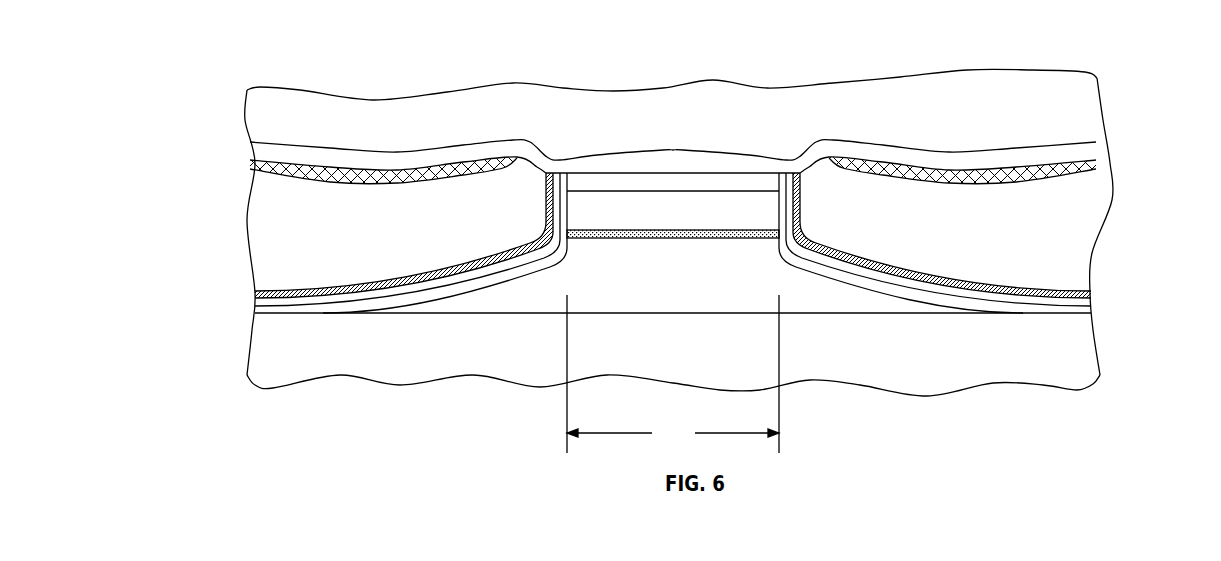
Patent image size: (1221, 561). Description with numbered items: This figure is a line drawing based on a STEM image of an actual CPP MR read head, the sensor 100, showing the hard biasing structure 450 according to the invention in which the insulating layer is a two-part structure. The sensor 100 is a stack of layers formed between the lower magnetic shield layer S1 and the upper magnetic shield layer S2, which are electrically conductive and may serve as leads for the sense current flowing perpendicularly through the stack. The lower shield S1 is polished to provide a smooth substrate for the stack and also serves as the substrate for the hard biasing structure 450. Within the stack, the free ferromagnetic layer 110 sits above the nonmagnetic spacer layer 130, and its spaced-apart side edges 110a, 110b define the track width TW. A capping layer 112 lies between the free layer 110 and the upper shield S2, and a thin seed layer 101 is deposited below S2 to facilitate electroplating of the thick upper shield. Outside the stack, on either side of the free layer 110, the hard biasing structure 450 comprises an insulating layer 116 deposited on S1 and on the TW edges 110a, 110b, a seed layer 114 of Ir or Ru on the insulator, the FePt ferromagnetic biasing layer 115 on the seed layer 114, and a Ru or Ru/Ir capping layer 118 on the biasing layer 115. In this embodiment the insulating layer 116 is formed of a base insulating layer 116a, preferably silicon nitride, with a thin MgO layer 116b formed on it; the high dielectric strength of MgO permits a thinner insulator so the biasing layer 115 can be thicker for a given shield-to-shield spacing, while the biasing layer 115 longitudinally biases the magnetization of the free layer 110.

The sensor 100 is at (518, 313).
The seed layer 101 is at (248, 148).
The free ferromagnetic layer 110 is at (693, 213).
The TW edge of free layer 110a is at (568, 197).
The TW edge of free layer 110b is at (778, 197).
The capping layer 112 is at (650, 178).
The seed layer 114 is at (255, 293).
The ferromagnetic biasing layer 115 is at (248, 223).
The insulating layer 116 is at (252, 298).
The base insulating layer 116a is at (452, 290).
The MgO layer 116b is at (435, 278).
The capping layer 118 is at (255, 168).
The nonmagnetic spacer layer 130 is at (637, 238).
The hard biasing structure 450 is at (192, 158).
The lower magnetic shield layer S1 is at (1057, 377).
The upper magnetic shield layer S2 is at (1058, 80).
The track width TW is at (673, 374).